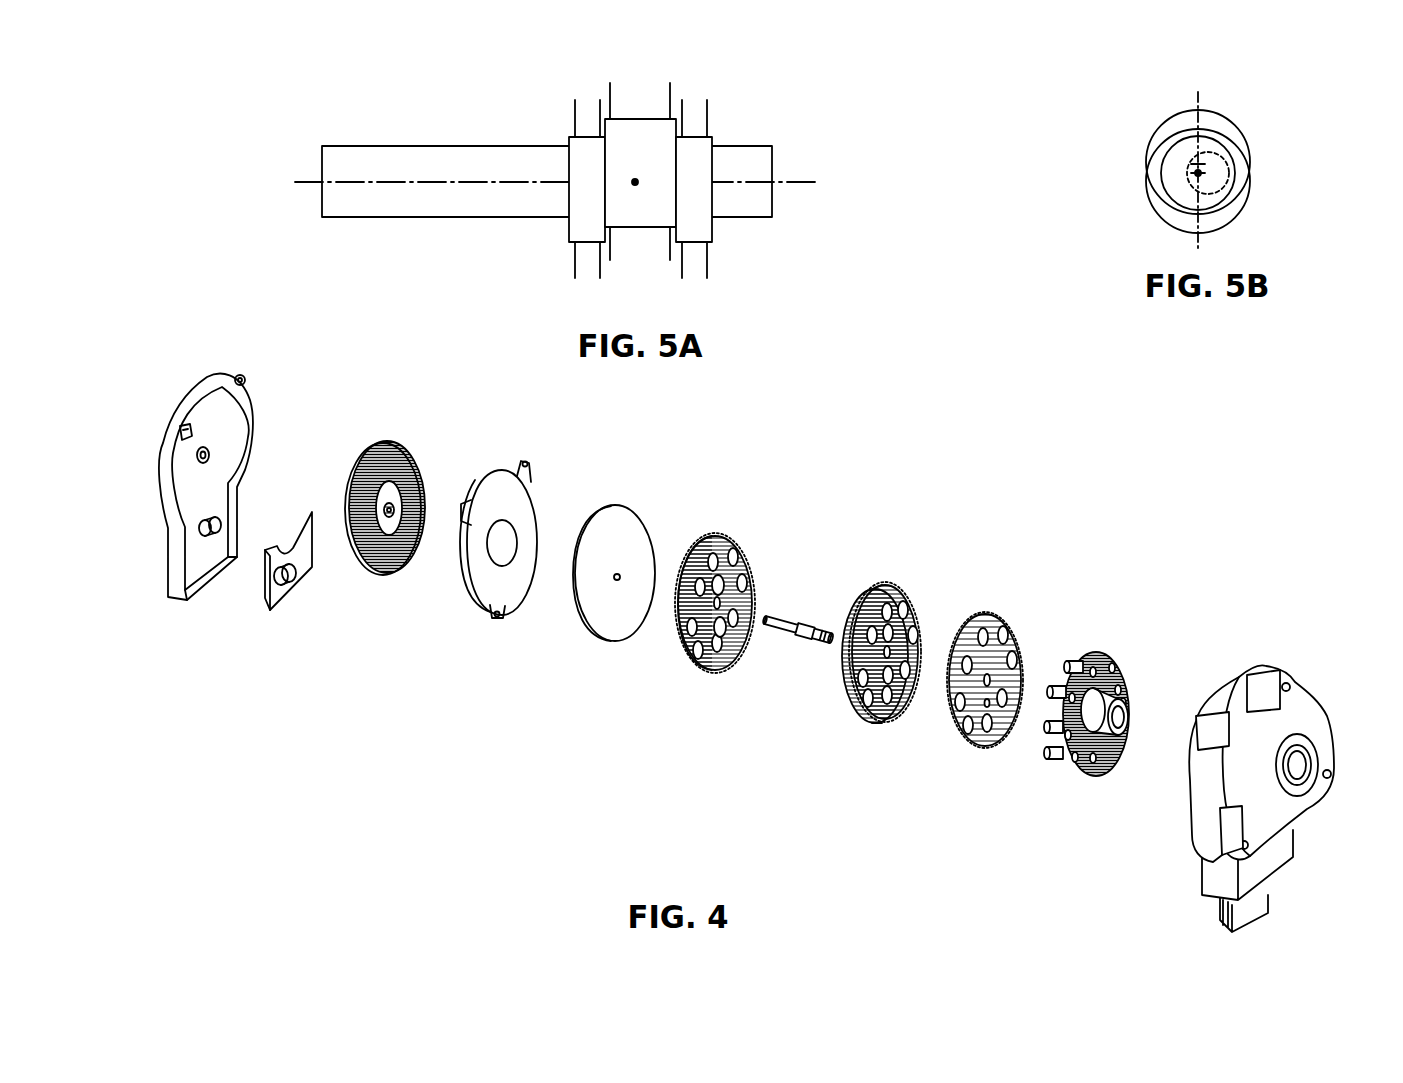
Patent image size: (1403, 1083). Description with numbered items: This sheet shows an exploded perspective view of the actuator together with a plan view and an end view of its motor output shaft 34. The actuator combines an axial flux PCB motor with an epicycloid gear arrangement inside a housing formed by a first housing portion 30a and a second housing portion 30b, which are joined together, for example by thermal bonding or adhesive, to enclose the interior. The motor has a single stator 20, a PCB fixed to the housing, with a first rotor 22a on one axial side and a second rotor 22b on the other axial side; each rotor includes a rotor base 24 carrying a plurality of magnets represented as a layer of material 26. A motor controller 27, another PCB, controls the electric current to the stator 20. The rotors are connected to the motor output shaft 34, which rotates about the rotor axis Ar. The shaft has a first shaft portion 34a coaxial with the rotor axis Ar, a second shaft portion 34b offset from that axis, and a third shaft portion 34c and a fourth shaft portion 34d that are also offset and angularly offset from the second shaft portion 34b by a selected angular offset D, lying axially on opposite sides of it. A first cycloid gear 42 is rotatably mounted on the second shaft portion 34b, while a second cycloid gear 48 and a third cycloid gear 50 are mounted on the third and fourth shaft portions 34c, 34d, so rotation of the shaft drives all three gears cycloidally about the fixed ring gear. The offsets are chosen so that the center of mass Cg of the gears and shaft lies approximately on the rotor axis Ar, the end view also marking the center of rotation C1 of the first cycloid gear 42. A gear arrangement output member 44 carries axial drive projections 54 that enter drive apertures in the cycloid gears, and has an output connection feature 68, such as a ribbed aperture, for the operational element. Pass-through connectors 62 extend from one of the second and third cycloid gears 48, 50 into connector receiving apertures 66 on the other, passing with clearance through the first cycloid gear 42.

In FIG. 4, the stator 20 is at (463, 587).
In FIG. 4, the first rotor 22a is at (384, 432).
In FIG. 4, the second rotor 22b is at (576, 654).
In FIG. 4, the rotor base 24 is at (357, 567).
In FIG. 4, the layer of material 26 is at (385, 564).
In FIG. 4, the motor controller 27 is at (267, 596).
In FIG. 4, the first housing portion 30a is at (199, 390).
In FIG. 4, the second housing portion 30b is at (1232, 690).
In FIG. 5A, the motor output shaft 34 is at (436, 88).
In FIG. 4, the motor output shaft 34 is at (788, 625).
In FIG. 5A, the first shaft portion 34a is at (420, 165).
In FIG. 5B, the first shaft portion 34a is at (1230, 192).
In FIG. 5A, the second shaft portion 34b is at (650, 128).
In FIG. 5B, the second shaft portion 34b is at (1198, 110).
In FIG. 5A, the third shaft portion 34c is at (578, 155).
In FIG. 5A, the fourth shaft portion 34d is at (702, 145).
In FIG. 5B, the fourth shaft portion 34d is at (1153, 208).
In FIG. 5A, the first cycloid gear 42 is at (610, 92).
In FIG. 4, the first cycloid gear 42 is at (860, 707).
In FIG. 4, the gear arrangement output member 44 is at (1073, 767).
In FIG. 5A, the second cycloid gear 48 is at (573, 258).
In FIG. 4, the second cycloid gear 48 is at (685, 650).
In FIG. 5A, the third cycloid gear 50 is at (708, 263).
In FIG. 4, the third cycloid gear 50 is at (960, 737).
In FIG. 4, the axial drive projections 54 is at (1073, 660).
In FIG. 4, the pass-through connector 62 is at (722, 625).
In FIG. 4, the connector receiving aperture 66 is at (720, 583).
In FIG. 4, the output connection feature 68 is at (1125, 712).
In FIG. 5A, the rotor axis Ar is at (790, 182).
In FIG. 5B, the rotor axis Ar is at (1196, 164).
In FIG. 5A, the center of mass Cg is at (635, 182).
In FIG. 5B, the center of mass Cg is at (1198, 173).
In FIG. 5B, the center of rotation of the first cycloid gear C1 is at (1198, 173).
In FIG. 5B, the selected angular offset D is at (1223, 160).